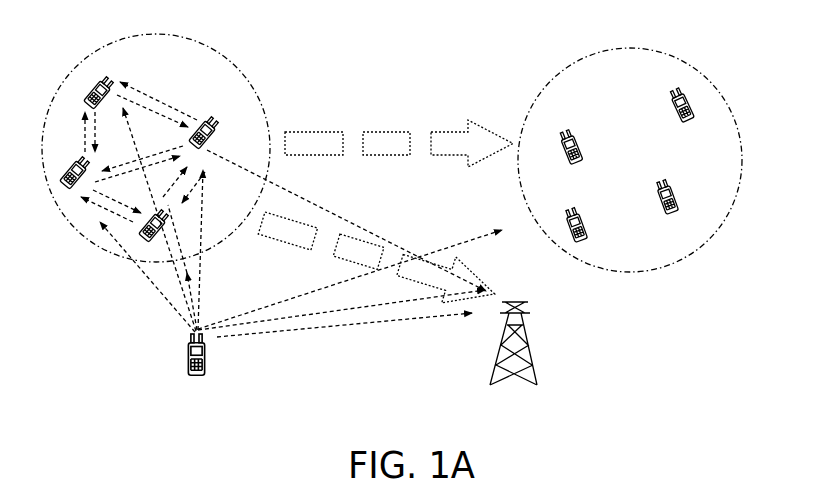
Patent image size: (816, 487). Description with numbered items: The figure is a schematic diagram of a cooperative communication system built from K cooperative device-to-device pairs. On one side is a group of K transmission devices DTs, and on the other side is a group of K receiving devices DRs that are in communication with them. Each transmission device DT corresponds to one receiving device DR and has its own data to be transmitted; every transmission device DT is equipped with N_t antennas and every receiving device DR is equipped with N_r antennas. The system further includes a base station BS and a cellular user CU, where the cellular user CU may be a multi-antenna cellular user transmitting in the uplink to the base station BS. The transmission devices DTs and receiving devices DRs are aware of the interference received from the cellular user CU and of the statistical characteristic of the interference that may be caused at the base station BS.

The transmission devices DTs is at (156, 135).
The transmission device DT is at (112, 76).
The receiving devices DRs is at (630, 145).
The receiving device DR is at (578, 137).
The cellular user CU is at (196, 369).
The base station BS is at (513, 361).